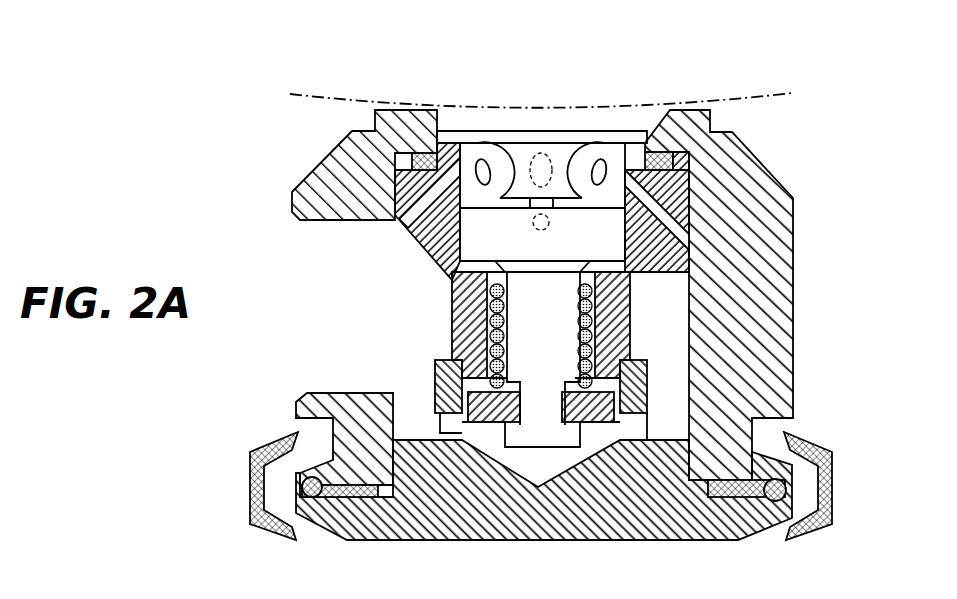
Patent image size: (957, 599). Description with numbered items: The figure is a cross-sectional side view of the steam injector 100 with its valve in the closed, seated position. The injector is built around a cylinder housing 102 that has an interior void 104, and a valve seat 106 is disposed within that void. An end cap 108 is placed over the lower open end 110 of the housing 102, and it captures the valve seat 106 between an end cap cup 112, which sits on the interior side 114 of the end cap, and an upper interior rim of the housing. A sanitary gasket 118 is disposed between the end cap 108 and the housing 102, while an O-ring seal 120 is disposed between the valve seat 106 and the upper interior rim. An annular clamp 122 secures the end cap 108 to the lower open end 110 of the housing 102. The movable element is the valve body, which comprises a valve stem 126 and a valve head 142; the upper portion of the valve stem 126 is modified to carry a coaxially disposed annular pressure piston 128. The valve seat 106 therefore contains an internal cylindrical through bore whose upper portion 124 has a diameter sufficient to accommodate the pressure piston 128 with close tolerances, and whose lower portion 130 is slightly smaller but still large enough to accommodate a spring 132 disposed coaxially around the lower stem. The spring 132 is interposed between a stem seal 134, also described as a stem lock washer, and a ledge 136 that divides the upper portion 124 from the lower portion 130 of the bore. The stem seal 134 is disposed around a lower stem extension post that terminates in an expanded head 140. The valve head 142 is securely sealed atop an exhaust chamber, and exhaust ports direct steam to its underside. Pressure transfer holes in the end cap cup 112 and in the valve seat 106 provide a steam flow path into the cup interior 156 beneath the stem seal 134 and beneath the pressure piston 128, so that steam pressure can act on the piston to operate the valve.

The steam injector 100 is at (679, 52).
The cylinder housing 102 is at (333, 160).
The interior void 104 is at (603, 296).
The valve seat 106 is at (673, 165).
The end cap 108 is at (397, 520).
The lower open end 110 is at (797, 427).
The end cap cup 112 is at (600, 342).
The interior side 114 is at (669, 448).
The sanitary gasket 118 is at (750, 500).
The O-ring seal 120 is at (420, 152).
The annular clamp 122 is at (838, 490).
The upper portion of the through bore 124 is at (640, 262).
The valve stem 126 is at (550, 343).
The pressure piston 128 is at (452, 283).
The lower portion of the through bore 130 is at (470, 338).
The spring 132 is at (503, 393).
The stem seal 134 is at (612, 368).
The ledge 136 is at (630, 282).
The expanded head 140 is at (648, 390).
The valve head 142 is at (521, 131).
The cup interior 156 is at (550, 463).